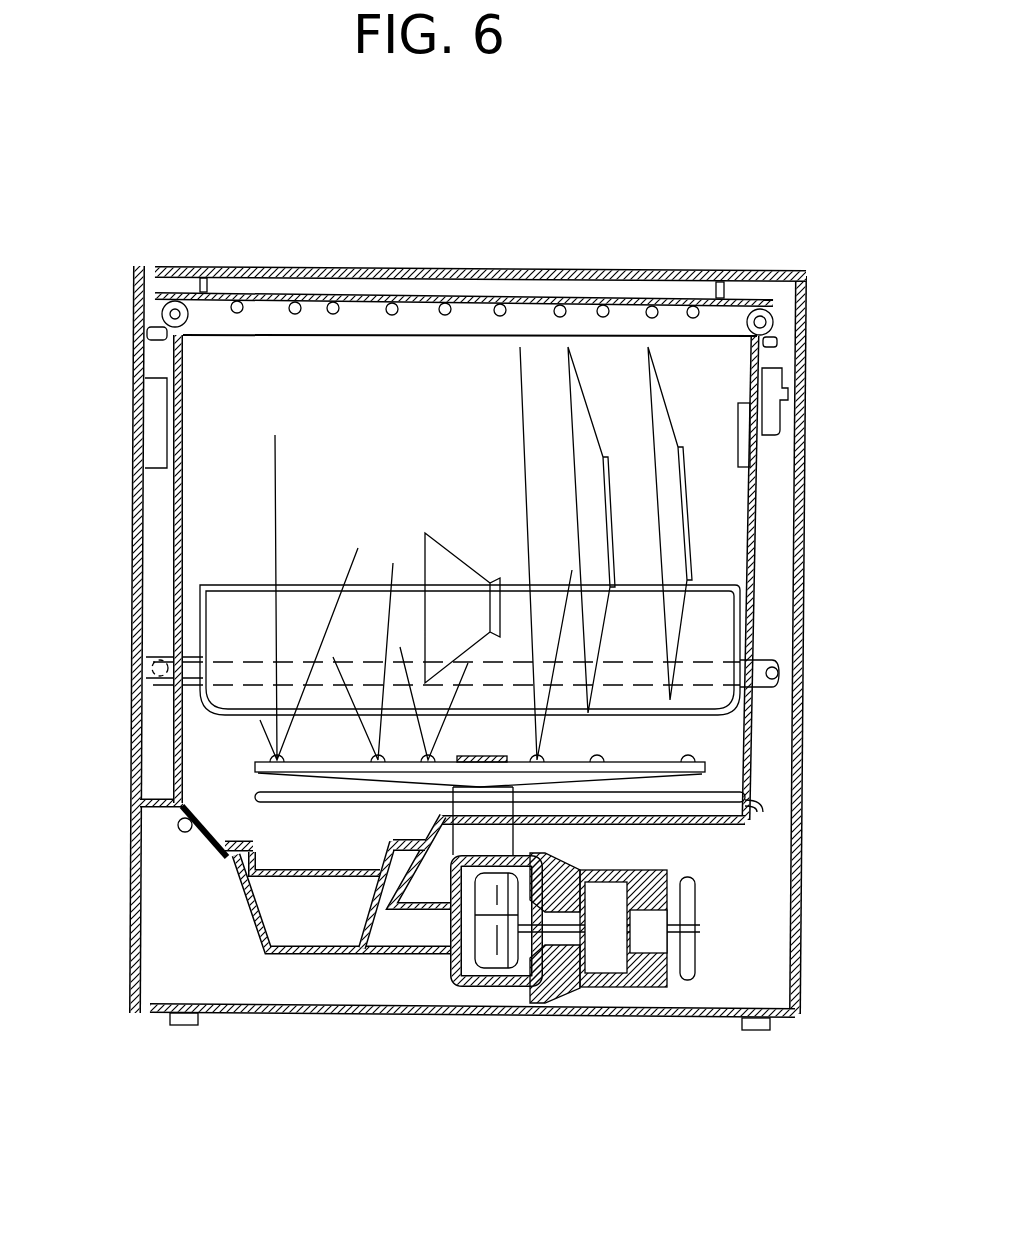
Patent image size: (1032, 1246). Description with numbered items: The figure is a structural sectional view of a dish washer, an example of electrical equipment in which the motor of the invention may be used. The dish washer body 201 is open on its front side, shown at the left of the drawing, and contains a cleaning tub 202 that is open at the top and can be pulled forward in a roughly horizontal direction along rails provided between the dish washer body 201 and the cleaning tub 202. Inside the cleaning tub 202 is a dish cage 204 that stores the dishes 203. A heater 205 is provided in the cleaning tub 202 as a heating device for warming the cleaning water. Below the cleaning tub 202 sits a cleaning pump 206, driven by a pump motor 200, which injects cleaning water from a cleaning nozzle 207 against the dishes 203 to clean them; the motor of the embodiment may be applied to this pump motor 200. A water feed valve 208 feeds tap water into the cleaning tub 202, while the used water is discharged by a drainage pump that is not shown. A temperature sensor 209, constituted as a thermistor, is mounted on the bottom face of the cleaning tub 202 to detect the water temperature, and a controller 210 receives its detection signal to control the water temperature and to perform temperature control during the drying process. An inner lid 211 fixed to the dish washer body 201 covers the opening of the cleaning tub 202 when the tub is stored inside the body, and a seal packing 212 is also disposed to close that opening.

The pump motor 200 is at (653, 987).
The dish washer body 201 is at (548, 270).
The cleaning tub 202 is at (757, 513).
The dishes 203 is at (655, 372).
The dish cage 204 is at (202, 613).
The heater 205 is at (717, 795).
The cleaning pump 206 is at (487, 985).
The cleaning nozzle 207 is at (660, 762).
The water feed valve 208 is at (778, 418).
The temperature sensor 209 is at (178, 830).
The controller 210 is at (155, 422).
The inner lid 211 is at (418, 297).
The seal packing 212 is at (777, 315).